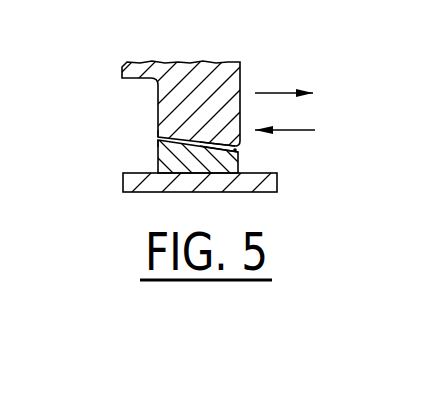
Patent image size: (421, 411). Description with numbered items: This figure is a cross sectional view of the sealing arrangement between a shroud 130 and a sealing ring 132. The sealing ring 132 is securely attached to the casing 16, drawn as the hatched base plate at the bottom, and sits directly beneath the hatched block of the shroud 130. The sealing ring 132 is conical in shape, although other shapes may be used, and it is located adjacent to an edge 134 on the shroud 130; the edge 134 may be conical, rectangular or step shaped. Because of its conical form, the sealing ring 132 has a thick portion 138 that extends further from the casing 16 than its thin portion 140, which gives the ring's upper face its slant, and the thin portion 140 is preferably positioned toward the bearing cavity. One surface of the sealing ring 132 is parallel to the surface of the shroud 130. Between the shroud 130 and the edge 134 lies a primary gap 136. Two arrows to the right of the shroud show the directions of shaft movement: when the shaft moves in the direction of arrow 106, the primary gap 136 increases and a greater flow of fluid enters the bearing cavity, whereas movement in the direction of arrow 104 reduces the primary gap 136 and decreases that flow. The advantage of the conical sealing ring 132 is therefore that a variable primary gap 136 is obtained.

The casing 16 is at (135, 187).
The arrow 104 is at (295, 128).
The arrow 106 is at (278, 93).
The shroud 130 is at (200, 72).
The sealing ring 132 is at (157, 158).
The edge 134 is at (238, 155).
The primary gap 136 is at (157, 134).
The thick portion 138 is at (156, 145).
The thin portion 140 is at (242, 162).